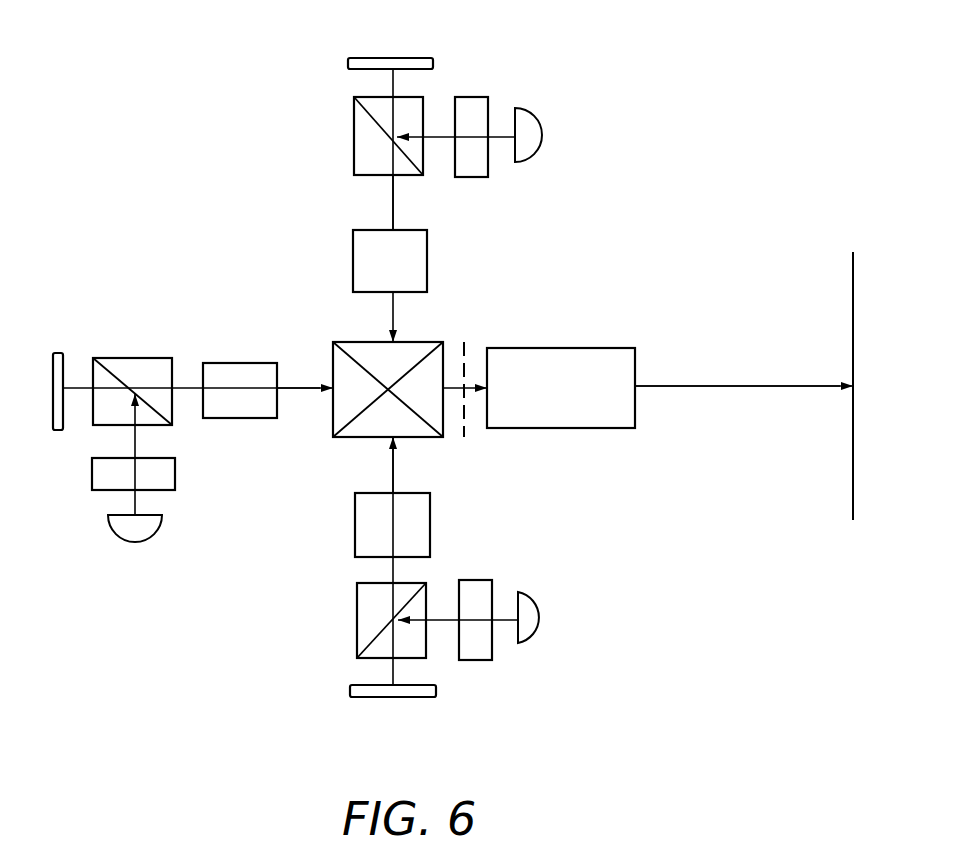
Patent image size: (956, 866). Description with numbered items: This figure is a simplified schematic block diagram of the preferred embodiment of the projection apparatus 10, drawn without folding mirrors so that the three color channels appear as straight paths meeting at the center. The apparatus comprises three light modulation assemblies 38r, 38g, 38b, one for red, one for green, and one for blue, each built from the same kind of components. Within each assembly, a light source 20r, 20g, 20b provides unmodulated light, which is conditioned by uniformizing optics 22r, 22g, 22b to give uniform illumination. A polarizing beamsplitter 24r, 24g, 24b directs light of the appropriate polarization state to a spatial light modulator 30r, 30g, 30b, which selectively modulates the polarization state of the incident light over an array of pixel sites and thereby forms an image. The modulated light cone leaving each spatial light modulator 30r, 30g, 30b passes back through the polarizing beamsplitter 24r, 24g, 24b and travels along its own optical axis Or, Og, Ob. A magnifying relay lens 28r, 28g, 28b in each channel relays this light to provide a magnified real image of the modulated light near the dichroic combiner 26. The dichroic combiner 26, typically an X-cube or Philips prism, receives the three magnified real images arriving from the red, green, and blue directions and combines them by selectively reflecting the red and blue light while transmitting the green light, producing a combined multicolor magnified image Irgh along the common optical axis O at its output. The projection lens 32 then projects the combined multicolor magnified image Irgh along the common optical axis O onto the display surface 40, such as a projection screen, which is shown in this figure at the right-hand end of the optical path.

The digital projection system 10 is at (698, 612).
The light source 20b is at (545, 118).
The light source 20g is at (150, 541).
The light source 20r is at (535, 643).
The uniformizing optics 22b is at (470, 97).
The uniformizing optics 22g is at (92, 487).
The uniformizing optics 22r is at (477, 660).
The polarizing beamsplitter 24b is at (354, 160).
The polarizing beamsplitter 24g is at (130, 358).
The polarizing beamsplitter 24r is at (357, 637).
The dichroic combiner 26 is at (430, 437).
The magnifying relay lens 28b is at (427, 268).
The magnifying relay lens 28g is at (225, 418).
The magnifying relay lens 28r is at (430, 520).
The spatial light modulator 30b is at (348, 63).
The spatial light modulator 30g is at (57, 353).
The spatial light modulator 30r is at (413, 697).
The projection lens 32 is at (575, 348).
The light modulation assembly 38b is at (557, 178).
The light modulation assembly 38g is at (176, 280).
The light modulation assembly 38r is at (300, 612).
The display surface 40 is at (853, 470).
The optical axis Ob is at (395, 192).
The optical axis Og is at (303, 388).
The optical axis Or is at (393, 472).
The common optical axis O is at (722, 385).
The combined multicolor magnified image Irgh is at (465, 345).